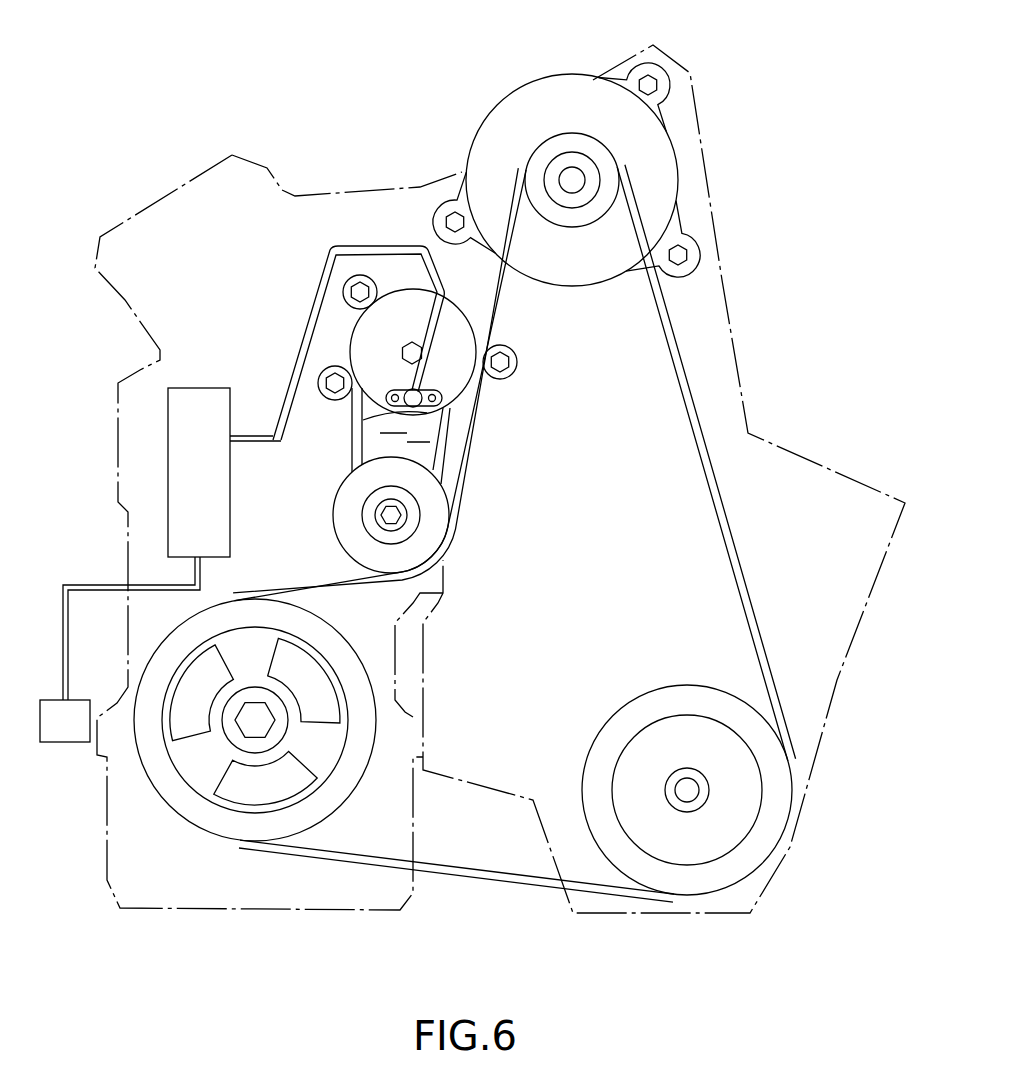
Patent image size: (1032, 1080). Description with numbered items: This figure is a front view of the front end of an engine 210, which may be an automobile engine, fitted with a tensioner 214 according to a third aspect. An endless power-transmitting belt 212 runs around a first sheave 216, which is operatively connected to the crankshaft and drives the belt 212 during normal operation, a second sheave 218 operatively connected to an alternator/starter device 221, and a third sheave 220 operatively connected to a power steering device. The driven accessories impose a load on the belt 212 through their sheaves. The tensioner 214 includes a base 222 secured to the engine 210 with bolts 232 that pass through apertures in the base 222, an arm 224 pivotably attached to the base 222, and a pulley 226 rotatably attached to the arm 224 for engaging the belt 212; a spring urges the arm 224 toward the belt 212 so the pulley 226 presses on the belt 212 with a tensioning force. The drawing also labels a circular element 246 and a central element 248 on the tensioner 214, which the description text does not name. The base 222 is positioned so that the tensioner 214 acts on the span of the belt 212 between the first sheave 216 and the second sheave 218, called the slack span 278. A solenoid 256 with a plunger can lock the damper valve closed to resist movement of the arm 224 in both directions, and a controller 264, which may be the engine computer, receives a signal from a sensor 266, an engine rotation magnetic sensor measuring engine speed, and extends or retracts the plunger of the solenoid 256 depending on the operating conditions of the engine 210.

The engine 210 is at (787, 460).
The endless power-transmitting belt 212 is at (497, 870).
The tensioner 214 is at (330, 462).
The first sheave 216 is at (200, 812).
The second sheave 218 is at (613, 172).
The third sheave 220 is at (790, 795).
The alternator/starter device 221 is at (553, 97).
The base 222 is at (352, 313).
The arm 224 is at (350, 452).
The pulley 226 is at (350, 518).
The bolts 232 is at (362, 280).
The tensioner 246 is at (470, 330).
The pivot nut 248 is at (402, 351).
The solenoid 256 is at (403, 403).
The controller 264 is at (178, 452).
The sensor 266 is at (70, 733).
The slack span 278 is at (318, 582).